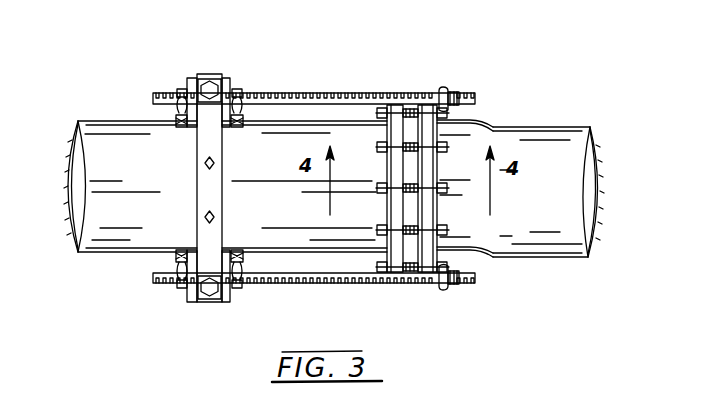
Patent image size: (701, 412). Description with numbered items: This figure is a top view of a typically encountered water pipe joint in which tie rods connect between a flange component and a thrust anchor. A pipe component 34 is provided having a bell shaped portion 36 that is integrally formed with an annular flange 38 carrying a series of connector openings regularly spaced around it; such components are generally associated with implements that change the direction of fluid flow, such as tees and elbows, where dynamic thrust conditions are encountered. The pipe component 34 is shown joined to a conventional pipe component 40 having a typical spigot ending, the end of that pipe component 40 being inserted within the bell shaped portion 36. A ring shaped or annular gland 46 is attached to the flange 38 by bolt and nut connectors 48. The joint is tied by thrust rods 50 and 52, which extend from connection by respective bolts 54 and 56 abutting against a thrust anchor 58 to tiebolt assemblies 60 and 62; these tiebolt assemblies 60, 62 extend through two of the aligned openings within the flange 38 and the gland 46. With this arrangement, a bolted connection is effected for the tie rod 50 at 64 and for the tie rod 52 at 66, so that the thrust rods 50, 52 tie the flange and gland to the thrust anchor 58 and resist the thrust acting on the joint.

The pipe component 34 is at (554, 132).
The bell shaped portion 36 is at (478, 120).
The annular flange 38 is at (432, 106).
The pipe component 40 is at (132, 233).
The gland 46 is at (393, 106).
The bolt and nut connectors 48 is at (446, 148).
The thrust rod 50 is at (302, 94).
The thrust rod 52 is at (285, 283).
The bolt 54 is at (183, 92).
The bolt 56 is at (182, 287).
The thrust anchor 58 is at (211, 71).
The tiebolt assembly 60 is at (442, 88).
The tiebolt assembly 62 is at (445, 290).
The bolted connection 64 is at (452, 92).
The bolted connection 66 is at (462, 282).